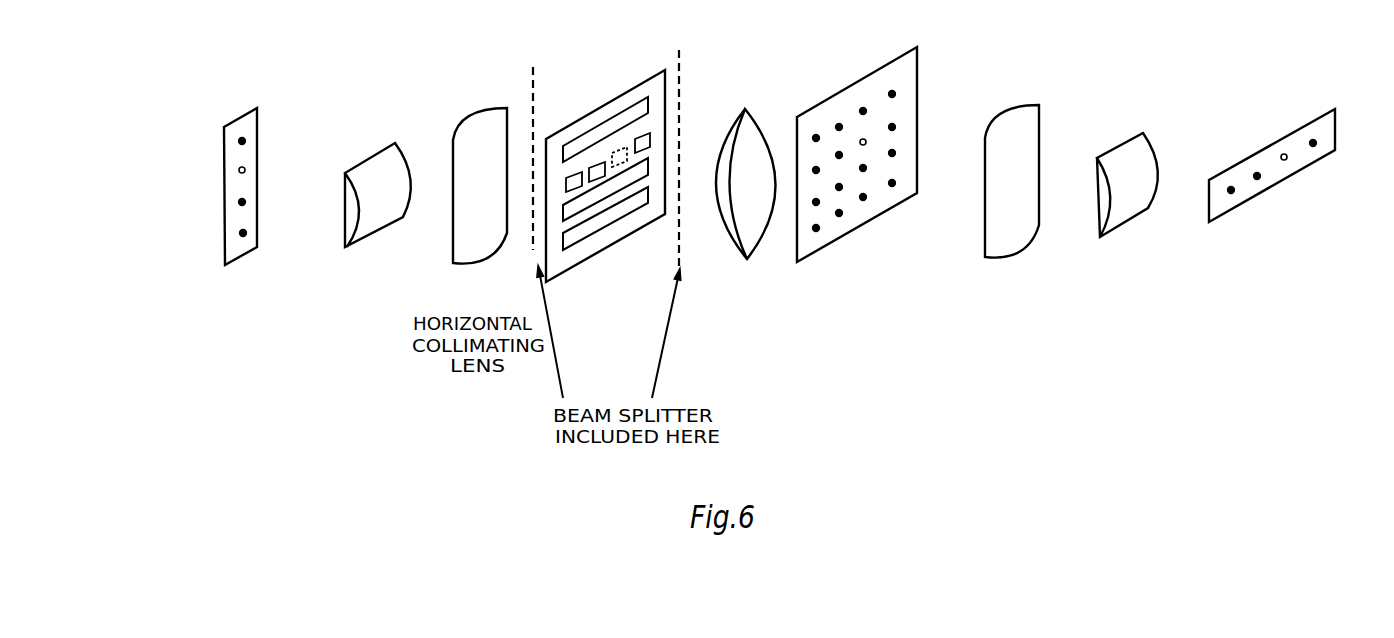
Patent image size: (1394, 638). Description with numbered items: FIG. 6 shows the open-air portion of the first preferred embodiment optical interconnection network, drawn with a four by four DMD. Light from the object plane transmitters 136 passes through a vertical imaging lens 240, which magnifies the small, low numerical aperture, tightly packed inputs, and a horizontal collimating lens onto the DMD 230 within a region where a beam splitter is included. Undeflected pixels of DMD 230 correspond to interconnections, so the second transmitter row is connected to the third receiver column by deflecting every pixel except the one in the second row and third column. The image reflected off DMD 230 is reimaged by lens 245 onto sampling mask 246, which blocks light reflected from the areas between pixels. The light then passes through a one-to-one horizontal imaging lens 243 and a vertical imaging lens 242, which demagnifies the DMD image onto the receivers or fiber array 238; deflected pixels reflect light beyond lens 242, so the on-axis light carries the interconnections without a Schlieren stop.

The object plane transmitters 136 is at (242, 110).
The imaging lens 240 is at (365, 161).
The DMD 230 is at (601, 105).
The lens 245 is at (757, 120).
The sampling mask 246 is at (857, 81).
The lens 243 is at (1005, 116).
The imaging lens 242 is at (1125, 142).
The detectors 238 is at (1240, 160).